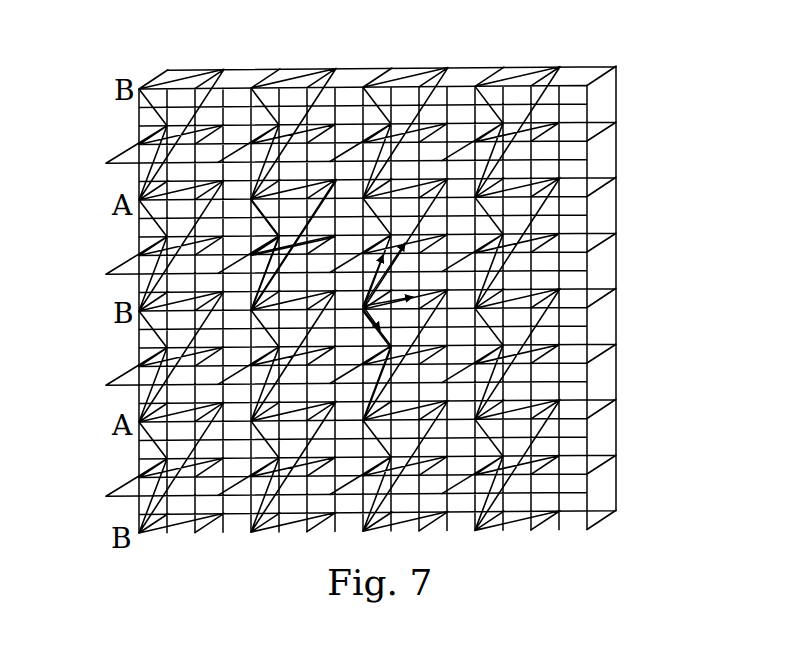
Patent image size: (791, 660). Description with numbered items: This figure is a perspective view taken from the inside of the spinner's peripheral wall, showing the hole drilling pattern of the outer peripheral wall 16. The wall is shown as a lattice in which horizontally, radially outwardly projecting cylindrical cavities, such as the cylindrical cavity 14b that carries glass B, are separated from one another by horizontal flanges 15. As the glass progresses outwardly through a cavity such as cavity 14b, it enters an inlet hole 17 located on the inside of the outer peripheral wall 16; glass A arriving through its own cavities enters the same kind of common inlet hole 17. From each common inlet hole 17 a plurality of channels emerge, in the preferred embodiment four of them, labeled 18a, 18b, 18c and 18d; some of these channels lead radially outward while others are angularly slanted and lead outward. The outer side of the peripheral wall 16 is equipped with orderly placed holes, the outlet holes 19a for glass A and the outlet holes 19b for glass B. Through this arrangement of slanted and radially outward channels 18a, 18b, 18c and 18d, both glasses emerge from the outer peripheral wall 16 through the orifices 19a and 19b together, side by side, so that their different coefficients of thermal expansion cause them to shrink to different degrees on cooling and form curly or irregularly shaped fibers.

The cylindrical cavity for glass B 14b is at (238, 302).
The horizontal flange 15 is at (606, 262).
The outer peripheral wall 16 is at (477, 69).
The inlet hole 17 is at (363, 306).
The channel 18a is at (410, 272).
The channel 18b is at (363, 306).
The channel 18c is at (363, 306).
The channel 18d is at (412, 288).
The outlet hole type A 19a is at (283, 232).
The outlet hole type B 19b is at (337, 182).